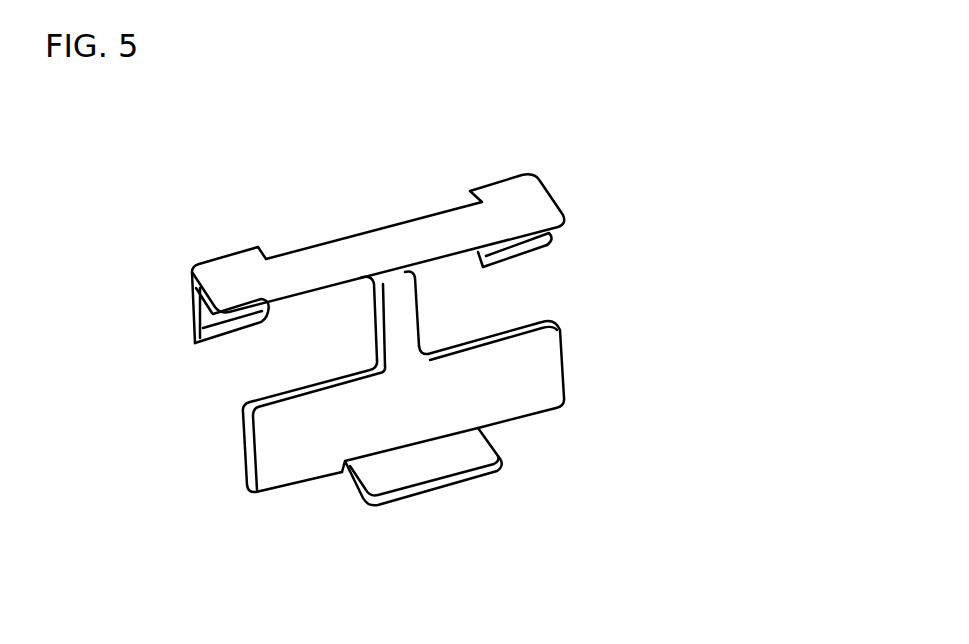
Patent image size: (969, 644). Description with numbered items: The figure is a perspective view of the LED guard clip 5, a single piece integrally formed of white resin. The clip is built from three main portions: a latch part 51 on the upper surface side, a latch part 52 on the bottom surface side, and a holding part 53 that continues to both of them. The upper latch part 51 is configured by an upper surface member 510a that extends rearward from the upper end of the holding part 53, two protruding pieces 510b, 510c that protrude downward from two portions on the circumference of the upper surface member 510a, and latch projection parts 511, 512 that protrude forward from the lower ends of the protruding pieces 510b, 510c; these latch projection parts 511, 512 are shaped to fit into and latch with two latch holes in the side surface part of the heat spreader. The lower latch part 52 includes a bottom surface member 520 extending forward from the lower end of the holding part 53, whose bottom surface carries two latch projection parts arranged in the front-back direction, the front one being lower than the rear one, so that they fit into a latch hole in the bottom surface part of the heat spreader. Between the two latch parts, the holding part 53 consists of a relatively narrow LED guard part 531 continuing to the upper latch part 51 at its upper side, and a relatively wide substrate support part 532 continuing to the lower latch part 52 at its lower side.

The LED guard clip 5 is at (653, 152).
The latch part 51 is at (257, 225).
The upper surface member 510a is at (380, 248).
The protruding piece 510b is at (196, 318).
The protruding piece 510c is at (545, 231).
The latch projection part 511 is at (228, 325).
The latch projection part 512 is at (505, 262).
The latch part 52 is at (363, 510).
The bottom surface member 520 is at (474, 457).
The holding part 53 is at (707, 282).
The LED guard part 531 is at (403, 315).
The substrate support part 532 is at (480, 388).